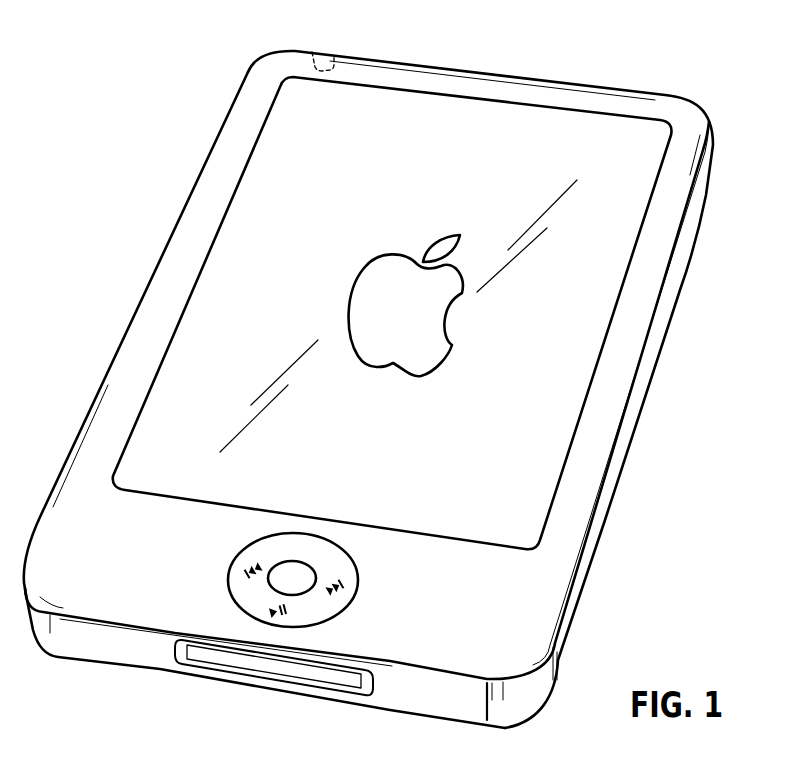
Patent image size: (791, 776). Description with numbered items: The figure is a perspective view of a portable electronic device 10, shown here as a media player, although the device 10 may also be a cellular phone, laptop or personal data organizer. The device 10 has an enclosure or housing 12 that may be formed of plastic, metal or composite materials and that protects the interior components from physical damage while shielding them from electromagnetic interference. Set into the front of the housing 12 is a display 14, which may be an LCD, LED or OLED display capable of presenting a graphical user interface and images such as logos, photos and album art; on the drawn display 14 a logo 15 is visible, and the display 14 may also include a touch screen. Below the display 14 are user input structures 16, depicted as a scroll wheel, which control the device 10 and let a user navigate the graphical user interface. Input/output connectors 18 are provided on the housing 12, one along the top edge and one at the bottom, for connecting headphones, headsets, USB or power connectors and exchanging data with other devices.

The electronic device 10 is at (155, 75).
The housing 12 is at (712, 160).
The display 14 is at (572, 120).
The logo 15 is at (348, 265).
The user input structures 16 is at (228, 582).
The input/output connectors 18 is at (272, 668).